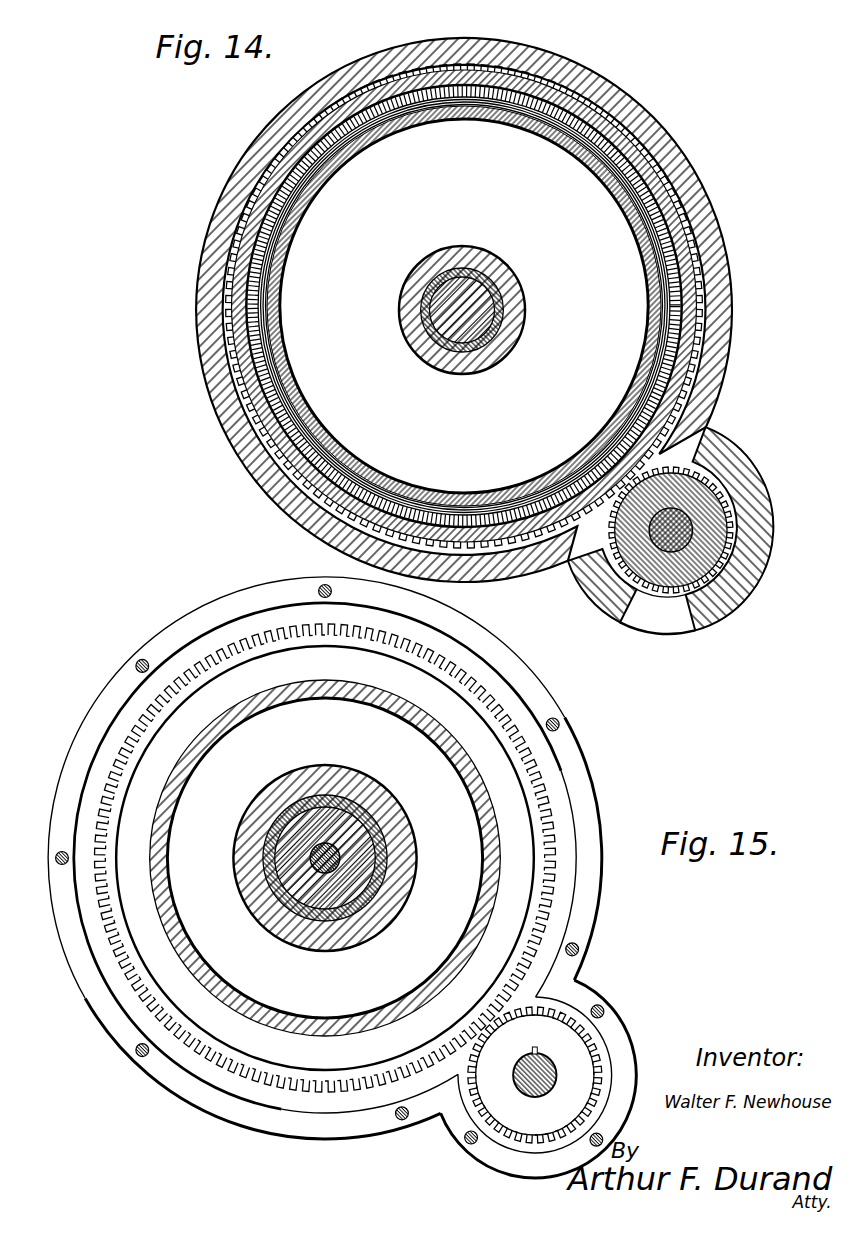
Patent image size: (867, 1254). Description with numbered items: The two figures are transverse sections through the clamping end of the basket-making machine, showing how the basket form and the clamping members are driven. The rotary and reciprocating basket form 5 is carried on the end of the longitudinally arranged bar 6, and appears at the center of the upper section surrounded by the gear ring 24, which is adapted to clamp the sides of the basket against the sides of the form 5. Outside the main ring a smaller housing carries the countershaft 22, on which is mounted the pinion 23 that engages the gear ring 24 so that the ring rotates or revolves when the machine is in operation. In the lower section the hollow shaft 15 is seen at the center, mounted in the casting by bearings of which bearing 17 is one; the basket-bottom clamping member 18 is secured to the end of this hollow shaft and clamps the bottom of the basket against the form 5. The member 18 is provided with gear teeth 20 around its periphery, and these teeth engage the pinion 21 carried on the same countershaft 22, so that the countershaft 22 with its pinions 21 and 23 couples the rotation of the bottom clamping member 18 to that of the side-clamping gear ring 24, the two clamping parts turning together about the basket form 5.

In FIG. 14, the basket form 5 is at (526, 320).
In FIG. 14, the longitudinally arranged bar 6 is at (487, 328).
In FIG. 14, the gear ring 24 is at (683, 350).
In FIG. 14, the countershaft 22 is at (620, 563).
In FIG. 15, the countershaft 22 is at (523, 1073).
In FIG. 14, the pinion 23 is at (687, 570).
In FIG. 15, the hollow shaft 15 is at (365, 855).
In FIG. 15, the bearing 17 is at (408, 835).
In FIG. 15, the basket-bottom clamping member 18 is at (335, 868).
In FIG. 15, the gear teeth 20 is at (555, 820).
In FIG. 15, the pinion 21 is at (580, 1047).